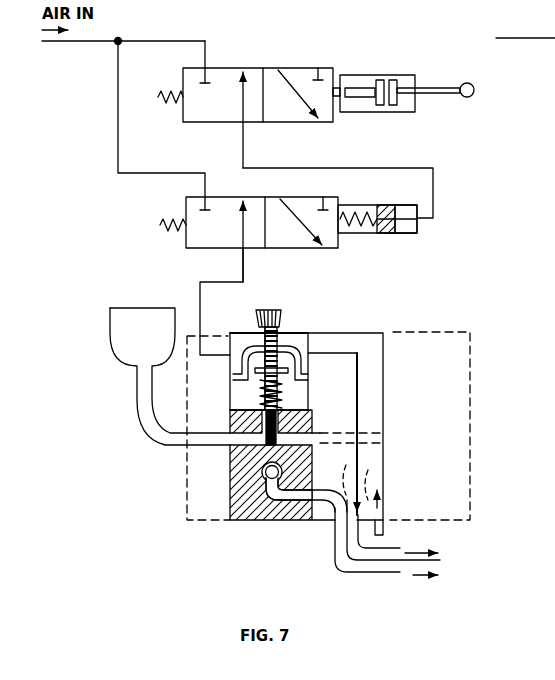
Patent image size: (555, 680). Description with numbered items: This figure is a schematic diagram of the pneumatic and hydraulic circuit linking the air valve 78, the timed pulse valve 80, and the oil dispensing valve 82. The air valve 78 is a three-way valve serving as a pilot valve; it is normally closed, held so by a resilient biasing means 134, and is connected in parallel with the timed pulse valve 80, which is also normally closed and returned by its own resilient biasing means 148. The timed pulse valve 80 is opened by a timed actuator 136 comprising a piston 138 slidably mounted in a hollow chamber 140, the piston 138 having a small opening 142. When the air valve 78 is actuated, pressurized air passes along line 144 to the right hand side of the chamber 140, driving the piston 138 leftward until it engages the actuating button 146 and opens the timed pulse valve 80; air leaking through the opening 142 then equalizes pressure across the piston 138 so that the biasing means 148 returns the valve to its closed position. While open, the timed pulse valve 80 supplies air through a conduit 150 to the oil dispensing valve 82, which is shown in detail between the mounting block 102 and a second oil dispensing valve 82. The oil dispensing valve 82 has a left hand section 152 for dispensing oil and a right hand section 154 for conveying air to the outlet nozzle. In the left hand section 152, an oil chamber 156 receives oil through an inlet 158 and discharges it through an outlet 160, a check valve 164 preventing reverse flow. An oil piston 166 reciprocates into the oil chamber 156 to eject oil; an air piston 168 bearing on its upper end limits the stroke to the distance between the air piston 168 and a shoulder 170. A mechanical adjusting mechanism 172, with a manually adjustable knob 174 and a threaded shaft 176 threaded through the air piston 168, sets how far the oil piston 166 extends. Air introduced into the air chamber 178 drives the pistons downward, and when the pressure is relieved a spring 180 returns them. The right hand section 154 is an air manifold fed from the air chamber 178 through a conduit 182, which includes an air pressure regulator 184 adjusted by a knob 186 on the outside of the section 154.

The air valve 78 is at (283, 66).
The timed pulse valve 80 is at (312, 249).
The oil dispensing valve 82 is at (268, 523).
The mounting block 102 is at (186, 521).
The resilient biasing means 134 is at (162, 103).
The timed actuator 136 is at (402, 236).
The piston 138 is at (378, 207).
The hollow chamber 140 is at (406, 205).
The small opening 142 is at (397, 220).
The pilot line 144 is at (347, 160).
The actuating button 146 is at (358, 233).
The resilient biasing means 148 is at (170, 220).
The conduit 150 is at (200, 283).
The left hand section 152 is at (290, 346).
The right hand section 154 is at (362, 333).
The oil chamber 156 is at (303, 441).
The inlet 158 is at (232, 447).
The outlet 160 is at (324, 491).
The check valve 164 is at (266, 477).
The oil piston 166 is at (285, 386).
The air piston 168 is at (297, 352).
The shoulder 170 is at (297, 413).
The mechanical adjusting mechanism 172 is at (300, 312).
The manually adjustable knob 174 is at (271, 308).
The threaded shaft 176 is at (262, 336).
The air chamber 178 is at (230, 366).
The spring 180 is at (256, 398).
The conduit 182 is at (357, 383).
The air pressure regulator 184 is at (372, 464).
The knob 186 is at (386, 527).